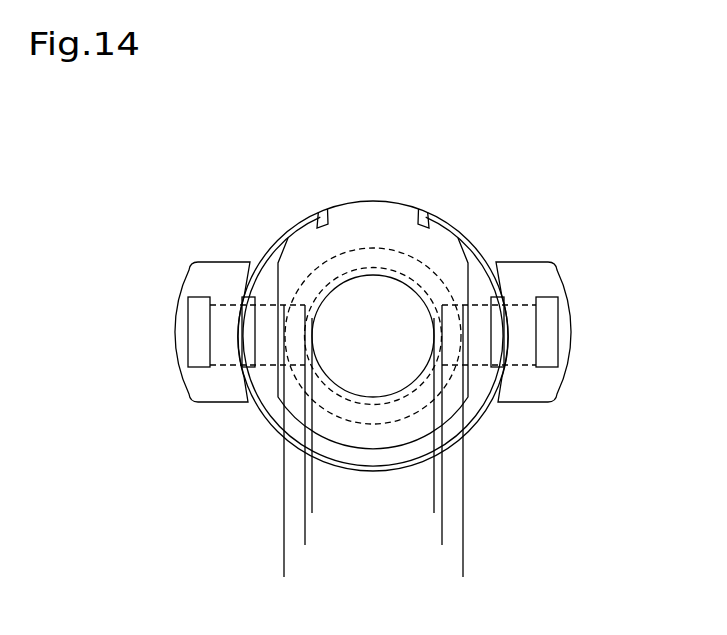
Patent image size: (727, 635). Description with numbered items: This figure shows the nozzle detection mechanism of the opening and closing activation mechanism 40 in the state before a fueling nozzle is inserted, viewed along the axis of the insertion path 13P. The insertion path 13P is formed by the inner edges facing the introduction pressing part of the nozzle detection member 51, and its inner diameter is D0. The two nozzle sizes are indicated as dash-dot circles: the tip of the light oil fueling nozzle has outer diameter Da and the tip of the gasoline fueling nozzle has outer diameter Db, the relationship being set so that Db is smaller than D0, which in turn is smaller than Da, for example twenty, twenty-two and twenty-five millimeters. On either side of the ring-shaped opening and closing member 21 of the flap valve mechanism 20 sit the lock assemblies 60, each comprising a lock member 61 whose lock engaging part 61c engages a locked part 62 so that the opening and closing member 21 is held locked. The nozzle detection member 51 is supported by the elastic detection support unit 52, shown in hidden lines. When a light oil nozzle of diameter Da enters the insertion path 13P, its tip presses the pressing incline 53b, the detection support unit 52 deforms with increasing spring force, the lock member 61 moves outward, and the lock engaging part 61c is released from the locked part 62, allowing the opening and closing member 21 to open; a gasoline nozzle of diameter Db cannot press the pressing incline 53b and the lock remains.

The flap valve mechanism 20 is at (373, 299).
The opening and closing member 21 is at (315, 228).
The opening and closing activation mechanism 40 is at (448, 203).
The insertion path 13P is at (406, 348).
The pressing incline 53b is at (447, 323).
The nozzle detection member 51 is at (386, 388).
The detection support unit 52 is at (525, 368).
The clamp assembly 60 is at (401, 419).
The lock member 61 is at (563, 390).
The lock engaging part 61c is at (508, 318).
The locked part 62 is at (465, 378).
The outer diameter of light oil fueling nozzle tip Da is at (463, 568).
The inner diameter of insertion path D0 is at (442, 533).
The outer diameter of gasoline fueling nozzle tip Db is at (434, 498).